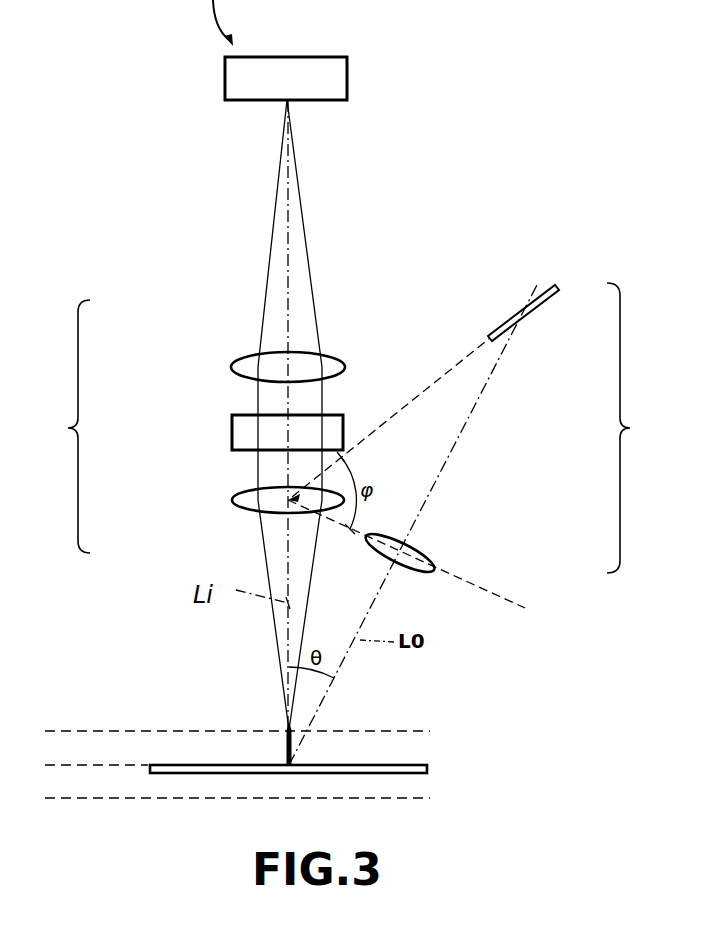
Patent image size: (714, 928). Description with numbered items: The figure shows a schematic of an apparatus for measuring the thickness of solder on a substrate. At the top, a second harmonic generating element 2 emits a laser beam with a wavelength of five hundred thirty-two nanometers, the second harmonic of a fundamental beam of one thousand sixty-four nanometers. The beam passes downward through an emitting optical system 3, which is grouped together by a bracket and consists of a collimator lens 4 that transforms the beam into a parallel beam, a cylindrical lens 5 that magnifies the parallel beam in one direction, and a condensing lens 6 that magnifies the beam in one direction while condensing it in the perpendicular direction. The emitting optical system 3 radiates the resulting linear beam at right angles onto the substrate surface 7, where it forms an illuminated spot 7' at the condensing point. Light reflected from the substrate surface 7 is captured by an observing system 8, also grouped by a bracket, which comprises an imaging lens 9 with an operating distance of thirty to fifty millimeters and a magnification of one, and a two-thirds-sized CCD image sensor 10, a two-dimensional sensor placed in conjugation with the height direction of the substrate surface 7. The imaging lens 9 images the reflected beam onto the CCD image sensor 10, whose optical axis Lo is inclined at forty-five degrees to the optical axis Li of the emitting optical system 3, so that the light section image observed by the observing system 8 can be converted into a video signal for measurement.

The second harmonic generating element 2 is at (347, 79).
The emitting optical system 3 is at (64, 426).
The collimator lens 4 is at (232, 366).
The cylindrical lens 5 is at (232, 430).
The condensing lens 6 is at (232, 497).
The substrate surface 7 is at (323, 759).
The illuminated spot on substrate 7' is at (237, 721).
The observing system 8 is at (629, 428).
The imaging lens 9 is at (432, 556).
The CCD image sensor 10 is at (557, 287).